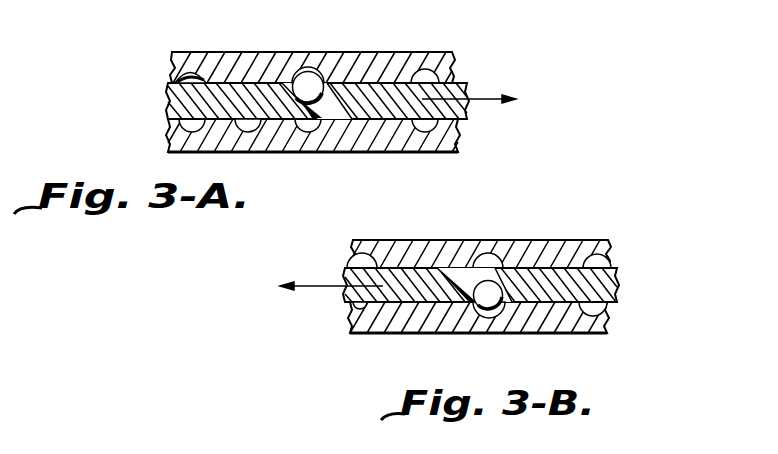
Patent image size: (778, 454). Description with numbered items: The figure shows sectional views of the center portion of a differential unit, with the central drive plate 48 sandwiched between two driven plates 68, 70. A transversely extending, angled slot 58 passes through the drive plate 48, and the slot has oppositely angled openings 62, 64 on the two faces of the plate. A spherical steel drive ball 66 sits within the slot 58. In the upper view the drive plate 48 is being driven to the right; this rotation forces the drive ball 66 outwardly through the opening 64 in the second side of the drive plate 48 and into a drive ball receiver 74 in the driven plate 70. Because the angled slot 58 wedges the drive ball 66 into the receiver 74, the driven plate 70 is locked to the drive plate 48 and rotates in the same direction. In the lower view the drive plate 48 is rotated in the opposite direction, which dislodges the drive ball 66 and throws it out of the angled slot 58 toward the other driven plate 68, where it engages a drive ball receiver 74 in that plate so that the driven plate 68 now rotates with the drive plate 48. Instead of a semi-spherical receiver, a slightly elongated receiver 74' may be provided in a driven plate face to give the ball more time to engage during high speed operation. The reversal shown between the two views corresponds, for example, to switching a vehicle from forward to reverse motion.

In FIG. 3A, the drive plate 48 is at (465, 88).
In FIG. 3B, the drive plate 48 is at (608, 287).
In FIG. 3A, the slot 58 is at (338, 108).
In FIG. 3B, the slot 58 is at (461, 274).
In FIG. 3B, the opening 62 is at (503, 306).
In FIG. 3A, the opening 64 is at (292, 80).
In FIG. 3A, the drive ball 66 is at (310, 74).
In FIG. 3B, the drive ball 66 is at (484, 307).
In FIG. 3A, the driven plate 68 is at (392, 153).
In FIG. 3B, the driven plate 68 is at (585, 333).
In FIG. 3A, the driven plate 70 is at (373, 52).
In FIG. 3B, the driven plate 70 is at (558, 240).
In FIG. 3A, the drive ball receiver 74 is at (192, 41).
In FIG. 3B, the drive ball receiver 74 is at (327, 330).
In FIG. 3A, the elongated receiver 74' is at (265, 153).